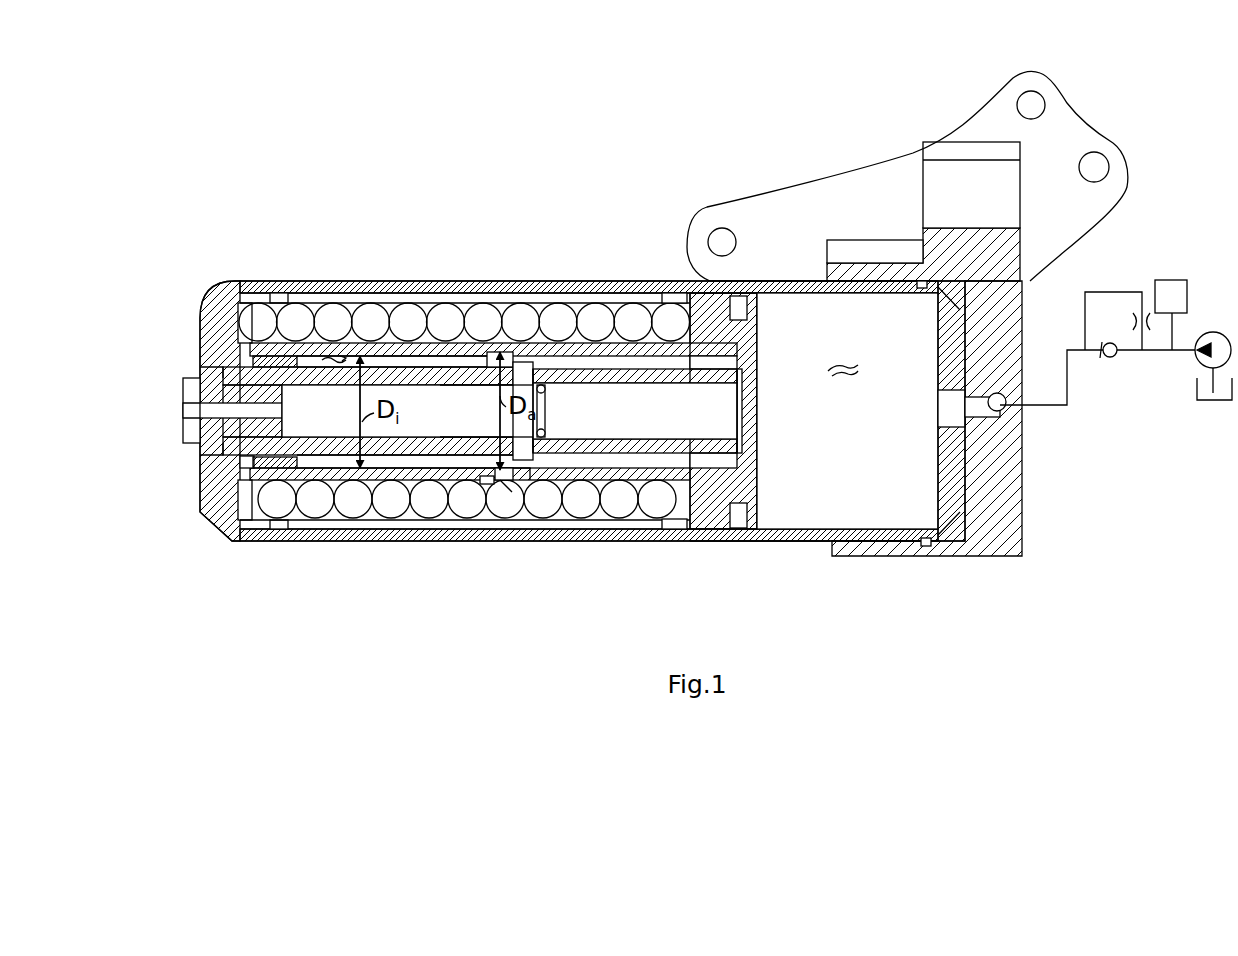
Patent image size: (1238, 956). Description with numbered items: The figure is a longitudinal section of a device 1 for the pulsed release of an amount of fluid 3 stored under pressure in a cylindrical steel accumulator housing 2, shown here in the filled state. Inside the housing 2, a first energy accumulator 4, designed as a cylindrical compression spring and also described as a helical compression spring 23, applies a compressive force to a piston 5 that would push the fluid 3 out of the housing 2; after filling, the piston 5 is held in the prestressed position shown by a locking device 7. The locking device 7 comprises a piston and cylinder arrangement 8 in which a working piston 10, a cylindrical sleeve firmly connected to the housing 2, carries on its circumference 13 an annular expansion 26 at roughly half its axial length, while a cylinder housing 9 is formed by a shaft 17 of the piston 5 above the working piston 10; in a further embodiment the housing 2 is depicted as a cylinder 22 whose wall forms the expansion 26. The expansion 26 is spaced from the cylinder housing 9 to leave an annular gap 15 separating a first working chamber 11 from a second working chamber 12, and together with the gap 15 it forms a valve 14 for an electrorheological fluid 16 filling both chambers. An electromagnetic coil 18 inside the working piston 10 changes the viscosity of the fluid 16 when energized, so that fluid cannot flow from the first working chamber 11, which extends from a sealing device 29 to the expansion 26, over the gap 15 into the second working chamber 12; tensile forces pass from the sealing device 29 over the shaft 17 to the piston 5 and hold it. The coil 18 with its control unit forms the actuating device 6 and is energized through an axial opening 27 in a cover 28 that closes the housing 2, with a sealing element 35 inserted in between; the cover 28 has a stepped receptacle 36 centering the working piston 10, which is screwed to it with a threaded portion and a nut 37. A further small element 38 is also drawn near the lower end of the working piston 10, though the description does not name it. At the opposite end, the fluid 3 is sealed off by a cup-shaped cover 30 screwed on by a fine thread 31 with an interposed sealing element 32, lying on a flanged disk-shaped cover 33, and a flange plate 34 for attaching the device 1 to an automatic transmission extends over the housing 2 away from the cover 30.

The device 1 is at (302, 172).
The accumulator housing 2 is at (340, 270).
The amount of fluid 3 is at (843, 366).
The first energy accumulator 4 is at (450, 526).
The piston 5 is at (300, 367).
The actuating device 6 is at (355, 457).
The locking device 7 is at (509, 501).
The piston and cylinder arrangement 8 is at (456, 391).
The cylinder housing 9 is at (377, 352).
The working piston 10 is at (488, 338).
The first working chamber 11 is at (420, 360).
The second working chamber 12 is at (500, 352).
The circumference 13 is at (465, 520).
The valve 14 is at (508, 488).
The gap 15 is at (516, 481).
The electrorheological fluid 16 is at (330, 363).
The shaft 17 is at (652, 361).
The electromagnetic coil 18 is at (278, 528).
The cylinder 22 is at (703, 542).
The helical compression spring 23 is at (615, 518).
The expansion 26 is at (458, 376).
The axial opening 27 is at (205, 412).
The cover 28 is at (218, 345).
The sealing device 29 is at (238, 466).
The cover 30 is at (1000, 472).
The fine thread 31 is at (880, 549).
The sealing element 32 is at (926, 548).
The disk-shaped cover 33 is at (953, 487).
The flange plate 34 is at (1090, 213).
The sealing element 35 is at (277, 293).
The receptacle 36 is at (220, 372).
The nut 37 is at (200, 440).
The spacer 38 is at (487, 522).